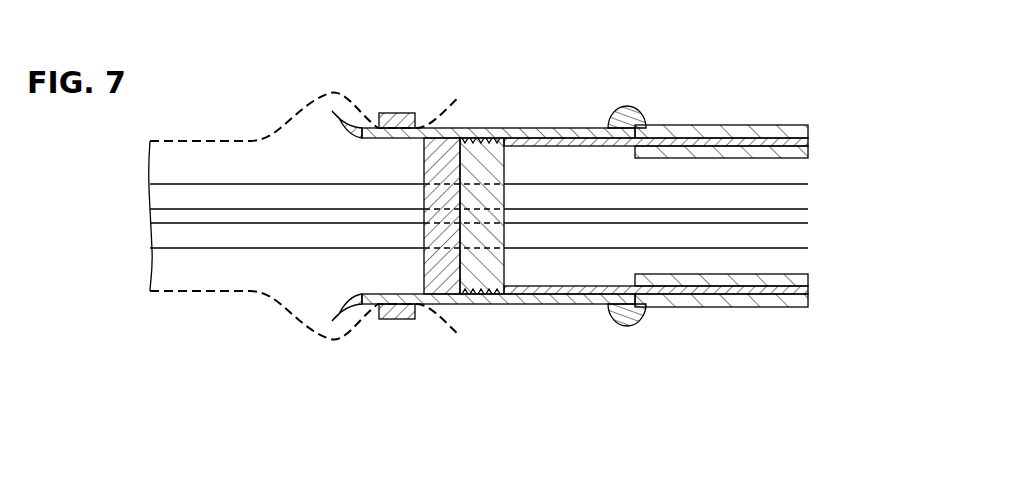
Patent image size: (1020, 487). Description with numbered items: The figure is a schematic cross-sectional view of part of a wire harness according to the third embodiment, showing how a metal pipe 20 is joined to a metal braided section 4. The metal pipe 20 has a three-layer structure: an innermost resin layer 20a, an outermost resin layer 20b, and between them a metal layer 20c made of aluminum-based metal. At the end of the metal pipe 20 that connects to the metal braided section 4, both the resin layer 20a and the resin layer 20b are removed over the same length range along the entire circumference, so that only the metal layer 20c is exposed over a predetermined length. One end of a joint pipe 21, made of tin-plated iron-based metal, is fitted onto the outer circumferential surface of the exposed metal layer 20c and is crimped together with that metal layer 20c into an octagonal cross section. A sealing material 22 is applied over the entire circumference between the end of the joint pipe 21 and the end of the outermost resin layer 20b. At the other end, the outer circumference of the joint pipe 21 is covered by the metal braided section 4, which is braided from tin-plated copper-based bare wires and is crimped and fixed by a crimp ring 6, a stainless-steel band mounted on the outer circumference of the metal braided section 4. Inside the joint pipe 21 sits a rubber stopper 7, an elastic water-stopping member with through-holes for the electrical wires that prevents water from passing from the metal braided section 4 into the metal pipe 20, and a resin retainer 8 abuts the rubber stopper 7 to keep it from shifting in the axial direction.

The metal braided section 4 is at (224, 292).
The crimp ring 6 is at (398, 113).
The rubber stopper 7 is at (483, 268).
The retainer 8 is at (441, 268).
The metal pipe 20 is at (664, 158).
The resin layer 20a is at (668, 50).
The resin layer 20b is at (690, 130).
The metal layer 20c is at (738, 141).
The joint pipe 21 is at (511, 315).
The sealing material 22 is at (628, 324).